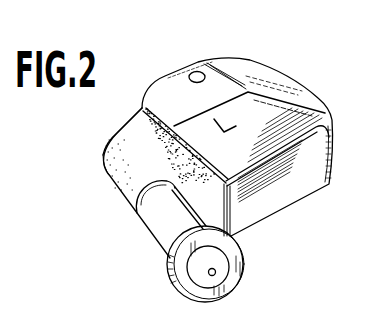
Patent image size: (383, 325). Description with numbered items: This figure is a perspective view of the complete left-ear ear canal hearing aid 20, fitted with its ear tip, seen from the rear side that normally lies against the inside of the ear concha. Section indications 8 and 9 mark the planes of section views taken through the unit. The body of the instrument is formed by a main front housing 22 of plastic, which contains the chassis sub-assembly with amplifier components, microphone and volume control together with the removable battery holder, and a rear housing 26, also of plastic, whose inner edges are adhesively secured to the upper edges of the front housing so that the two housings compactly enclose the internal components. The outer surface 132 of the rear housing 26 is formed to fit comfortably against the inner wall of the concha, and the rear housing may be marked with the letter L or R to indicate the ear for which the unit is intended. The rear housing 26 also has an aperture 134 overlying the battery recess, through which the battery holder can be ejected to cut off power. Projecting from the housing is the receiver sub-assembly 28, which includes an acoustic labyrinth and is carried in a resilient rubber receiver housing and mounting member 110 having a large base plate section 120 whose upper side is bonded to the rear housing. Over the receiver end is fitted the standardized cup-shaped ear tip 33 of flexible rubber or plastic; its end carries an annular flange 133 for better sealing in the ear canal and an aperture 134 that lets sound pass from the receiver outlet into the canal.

The section line 8- 8 is at (303, 34).
The section line 9- 9 is at (330, 72).
The ear canal hearing aid 20 is at (290, 238).
The main front housing 22 is at (300, 187).
The rear housing member 26 is at (314, 102).
The receiver sub-assembly 28 is at (115, 129).
The ear tip 33 is at (156, 229).
The receiver housing and mounting member 110 is at (128, 196).
The base plate section 120 is at (196, 187).
The outer surface of the rear housing 132 is at (264, 133).
The annular flange 133 is at (167, 258).
The aperture 134 is at (195, 73).